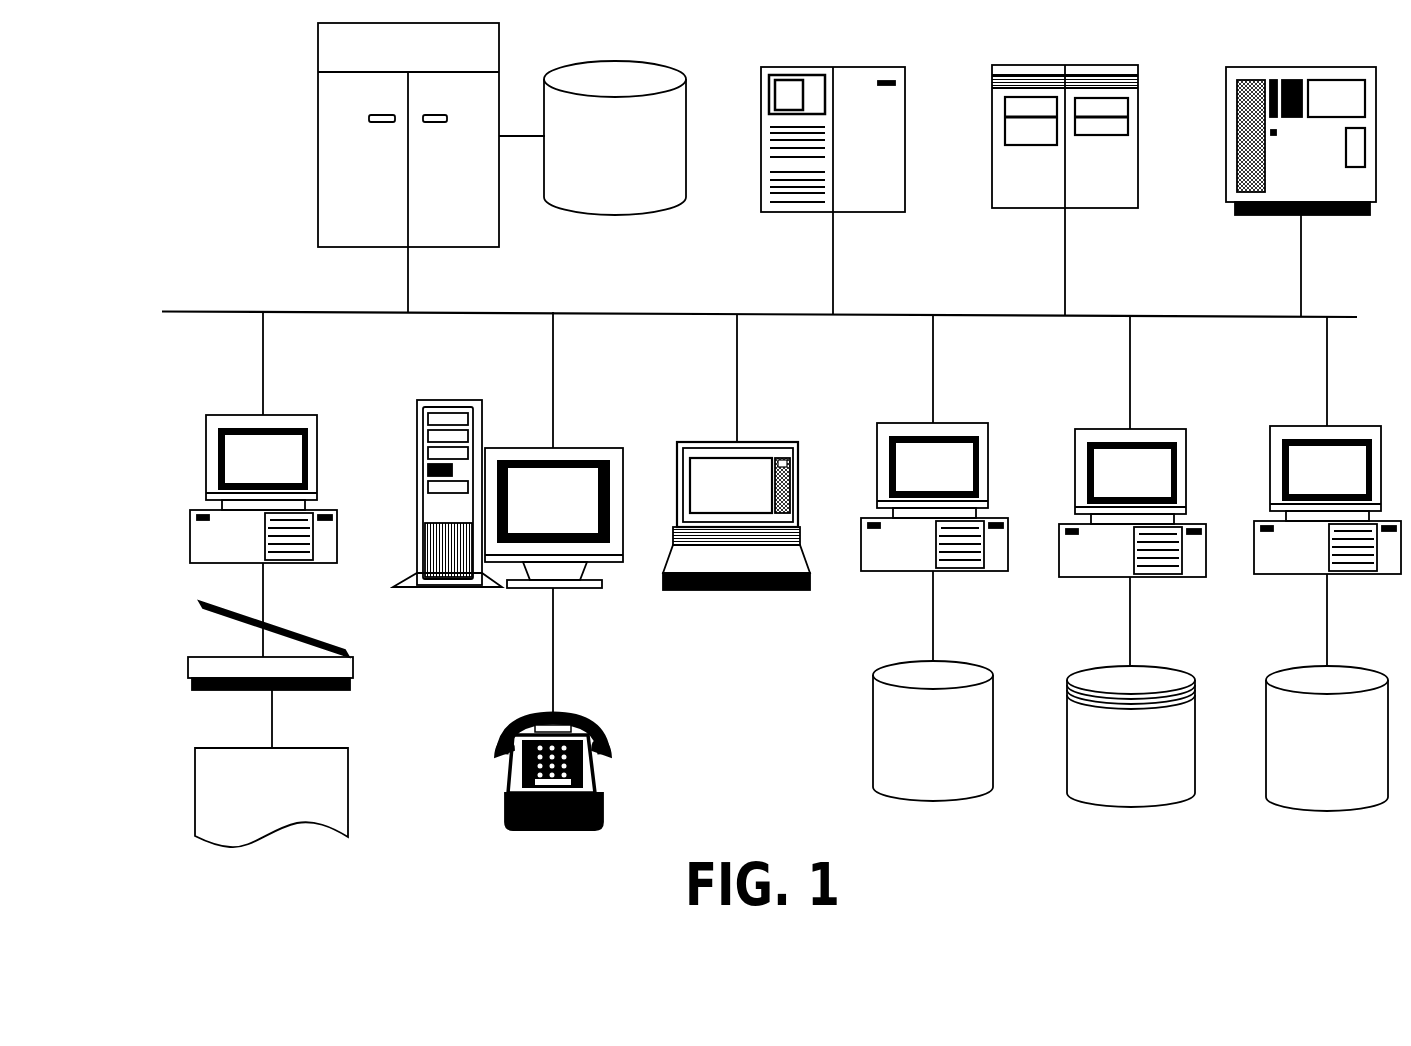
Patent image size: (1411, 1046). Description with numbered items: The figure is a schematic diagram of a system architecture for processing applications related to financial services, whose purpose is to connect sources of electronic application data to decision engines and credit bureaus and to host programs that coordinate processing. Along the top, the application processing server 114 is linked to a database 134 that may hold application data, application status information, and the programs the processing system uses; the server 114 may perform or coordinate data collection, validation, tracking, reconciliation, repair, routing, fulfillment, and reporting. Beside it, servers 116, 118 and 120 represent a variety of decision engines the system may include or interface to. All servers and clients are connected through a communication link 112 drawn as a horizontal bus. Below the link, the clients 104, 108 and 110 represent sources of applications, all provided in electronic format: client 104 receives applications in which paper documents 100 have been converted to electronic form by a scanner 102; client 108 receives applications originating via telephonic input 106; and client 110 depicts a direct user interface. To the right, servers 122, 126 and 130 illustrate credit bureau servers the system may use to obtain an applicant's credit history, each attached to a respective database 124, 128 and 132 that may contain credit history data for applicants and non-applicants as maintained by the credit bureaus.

The paper documents 100 is at (241, 783).
The scanner 102 is at (243, 674).
The client 104 is at (235, 484).
The telephonic input 106 is at (532, 774).
The client 108 is at (508, 514).
The client 110 is at (736, 469).
The communication link 112 is at (759, 301).
The server 114 is at (402, 167).
The server 116 is at (833, 168).
The server 118 is at (1065, 172).
The server 120 is at (1301, 172).
The server 122 is at (934, 488).
The database 124 is at (933, 752).
The server 126 is at (1132, 491).
The database 128 is at (1131, 752).
The server 130 is at (1327, 491).
The database 132 is at (1327, 754).
The database 134 is at (615, 117).